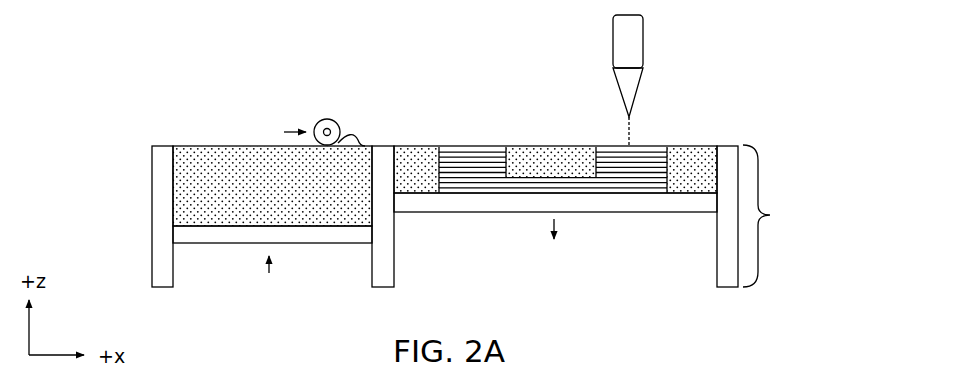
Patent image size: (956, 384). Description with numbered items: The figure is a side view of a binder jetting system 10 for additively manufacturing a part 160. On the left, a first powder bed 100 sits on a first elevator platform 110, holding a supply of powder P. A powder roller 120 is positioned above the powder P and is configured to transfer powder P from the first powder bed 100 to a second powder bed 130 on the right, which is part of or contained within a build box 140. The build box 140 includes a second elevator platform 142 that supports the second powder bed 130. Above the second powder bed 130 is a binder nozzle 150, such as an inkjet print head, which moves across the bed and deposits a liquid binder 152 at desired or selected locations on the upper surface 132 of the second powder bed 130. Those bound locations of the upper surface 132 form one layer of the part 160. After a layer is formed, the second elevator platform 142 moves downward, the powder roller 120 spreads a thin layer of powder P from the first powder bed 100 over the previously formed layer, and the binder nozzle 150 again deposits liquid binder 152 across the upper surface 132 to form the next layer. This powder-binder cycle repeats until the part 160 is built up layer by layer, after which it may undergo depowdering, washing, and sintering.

The system 10 is at (808, 55).
The first powder bed 100 is at (203, 138).
The first elevator platform 110 is at (200, 256).
The powder roller 120 is at (327, 107).
The second powder bed 130 is at (417, 137).
The upper surface 132 is at (473, 147).
The build box 140 is at (780, 216).
The second elevator platform 142 is at (697, 222).
The binder nozzle 150 is at (606, 44).
The liquid binder 152 is at (633, 126).
The part 160 is at (493, 139).
The powder P is at (262, 150).